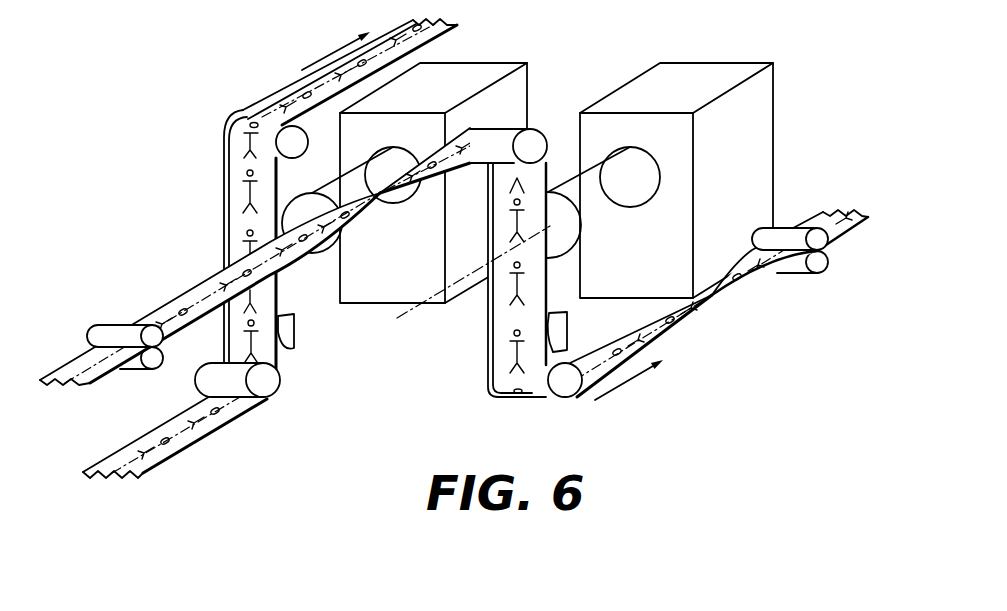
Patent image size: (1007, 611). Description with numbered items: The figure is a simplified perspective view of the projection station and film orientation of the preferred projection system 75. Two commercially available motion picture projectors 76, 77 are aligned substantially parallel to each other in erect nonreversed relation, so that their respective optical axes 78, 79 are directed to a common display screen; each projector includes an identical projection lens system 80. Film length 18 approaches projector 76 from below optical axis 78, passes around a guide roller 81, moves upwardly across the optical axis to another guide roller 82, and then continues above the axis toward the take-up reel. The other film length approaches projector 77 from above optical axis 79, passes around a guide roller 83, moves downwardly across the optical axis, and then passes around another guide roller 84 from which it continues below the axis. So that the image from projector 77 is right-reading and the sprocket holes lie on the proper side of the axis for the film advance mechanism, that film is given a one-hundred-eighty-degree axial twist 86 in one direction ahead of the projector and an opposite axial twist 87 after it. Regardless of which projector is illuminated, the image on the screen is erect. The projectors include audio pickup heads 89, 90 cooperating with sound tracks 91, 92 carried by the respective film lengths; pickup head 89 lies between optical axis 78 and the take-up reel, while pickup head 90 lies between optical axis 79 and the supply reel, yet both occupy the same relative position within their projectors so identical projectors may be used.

The film length 18 is at (204, 440).
The projection system 75 is at (282, 52).
The projector 76 is at (536, 90).
The projector 77 is at (782, 90).
The optical axis 78 is at (208, 281).
The optical axis 79 is at (415, 308).
The projection lens system 80 is at (322, 252).
The guide roller 81 is at (260, 378).
The guide roller 82 is at (288, 140).
The guide roller 83 is at (534, 142).
The guide roller 84 is at (564, 390).
The axial twist 86 is at (383, 196).
The axial twist 87 is at (714, 297).
The audio pickup head 89 is at (298, 340).
The audio pickup head 90 is at (568, 316).
The sound track 91 is at (224, 208).
The sound track 92 is at (489, 364).